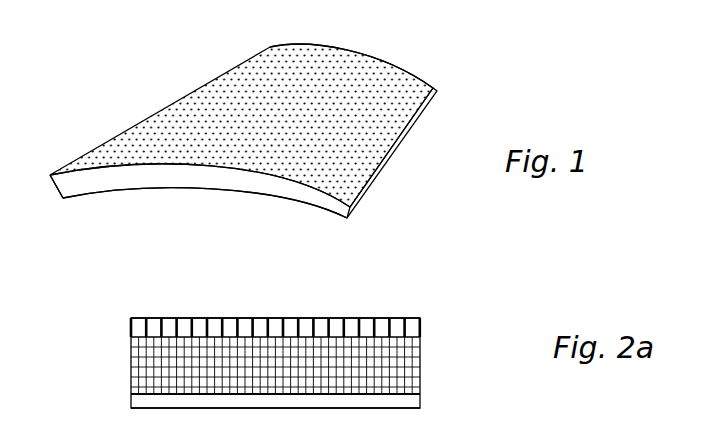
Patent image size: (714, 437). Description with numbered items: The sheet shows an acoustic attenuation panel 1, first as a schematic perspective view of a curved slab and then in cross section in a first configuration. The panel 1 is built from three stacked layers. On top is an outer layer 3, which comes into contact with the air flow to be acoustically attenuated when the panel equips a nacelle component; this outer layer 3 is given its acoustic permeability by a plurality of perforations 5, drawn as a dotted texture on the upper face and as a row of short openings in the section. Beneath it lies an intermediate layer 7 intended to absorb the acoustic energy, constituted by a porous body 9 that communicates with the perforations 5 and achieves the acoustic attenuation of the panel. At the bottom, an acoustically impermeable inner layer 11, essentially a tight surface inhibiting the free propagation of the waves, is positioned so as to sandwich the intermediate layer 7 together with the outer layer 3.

In FIG. 1, the acoustic attenuation panel 1 is at (125, 90).
In FIG. 2A, the acoustic attenuation panel 1 is at (132, 297).
In FIG. 1, the outer layer 3 is at (358, 62).
In FIG. 2A, the outer layer 3 is at (390, 317).
In FIG. 1, the perforations 5 is at (372, 105).
In FIG. 2A, the perforations 5 is at (212, 328).
In FIG. 1, the intermediate layer 7 is at (293, 187).
In FIG. 2A, the intermediate layer 7 is at (422, 365).
In FIG. 1, the porous body 9 is at (337, 205).
In FIG. 2A, the porous body 9 is at (157, 372).
In FIG. 1, the inner layer 11 is at (163, 190).
In FIG. 2A, the inner layer 11 is at (405, 410).